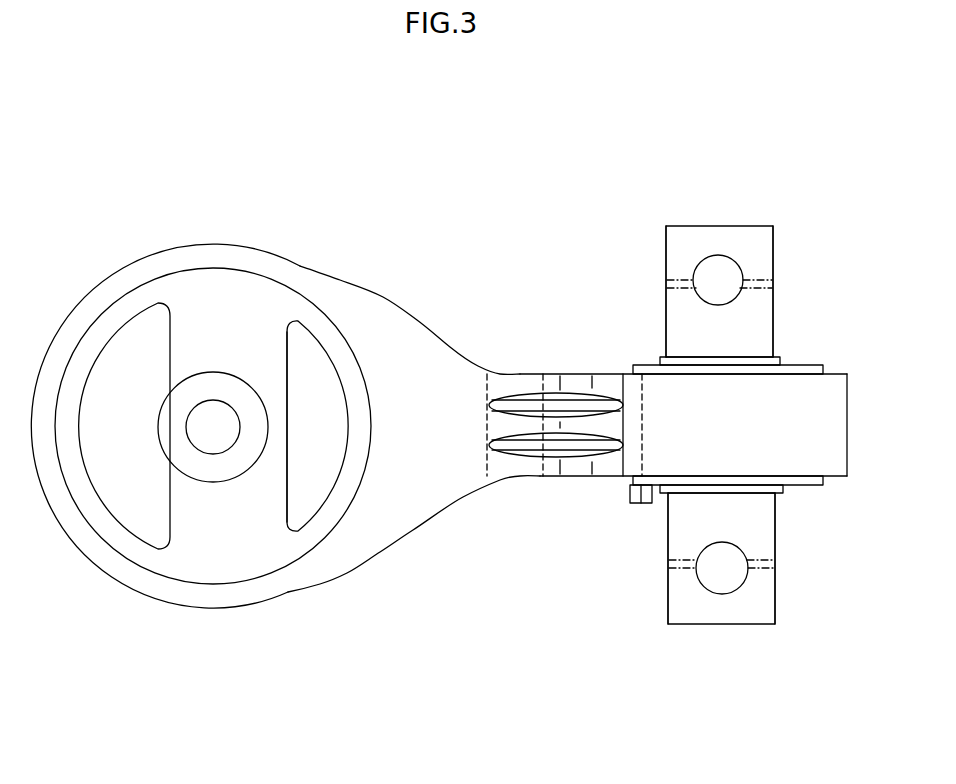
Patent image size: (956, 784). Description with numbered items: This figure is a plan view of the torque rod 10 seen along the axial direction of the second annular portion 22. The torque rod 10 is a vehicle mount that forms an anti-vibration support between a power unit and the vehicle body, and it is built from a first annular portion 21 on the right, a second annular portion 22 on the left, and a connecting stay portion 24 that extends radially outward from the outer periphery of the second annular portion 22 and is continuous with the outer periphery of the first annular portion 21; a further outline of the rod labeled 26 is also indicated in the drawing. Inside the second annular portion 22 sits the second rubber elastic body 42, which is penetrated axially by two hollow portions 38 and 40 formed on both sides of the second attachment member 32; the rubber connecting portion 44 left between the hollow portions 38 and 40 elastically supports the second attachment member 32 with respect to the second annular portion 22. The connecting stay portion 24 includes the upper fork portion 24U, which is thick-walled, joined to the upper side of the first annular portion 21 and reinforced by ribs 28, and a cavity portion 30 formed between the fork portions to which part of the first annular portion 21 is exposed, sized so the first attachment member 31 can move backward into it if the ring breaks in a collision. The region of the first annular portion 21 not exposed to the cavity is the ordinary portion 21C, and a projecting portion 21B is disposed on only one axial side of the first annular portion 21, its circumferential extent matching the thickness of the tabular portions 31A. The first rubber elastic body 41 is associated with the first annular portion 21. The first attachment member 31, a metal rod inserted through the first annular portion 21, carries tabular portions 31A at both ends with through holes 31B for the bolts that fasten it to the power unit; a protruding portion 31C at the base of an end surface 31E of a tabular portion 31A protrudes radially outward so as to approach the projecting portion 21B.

The torque rod 10 is at (415, 172).
The second annular portion 22 is at (168, 247).
The second rubber elastic body 42 is at (252, 271).
The arm portion 26 is at (440, 299).
The hollow portion 38 is at (115, 355).
The hollow portion 40 is at (303, 360).
The rubber connecting portion 44 is at (288, 443).
The second attachment member 32 is at (213, 371).
The connecting stay portion 24 is at (500, 371).
The upper fork portion 24U is at (617, 380).
The ribs 28 is at (588, 433).
The cavity portion 30 is at (590, 477).
The first annular portion 21 is at (852, 374).
The projecting portion 21B is at (623, 503).
The ordinary portion 21C is at (850, 437).
The first rubber elastic body 41 is at (800, 365).
The first attachment member 31 is at (735, 224).
The tabular portions 31A is at (692, 238).
The through holes 31B is at (703, 275).
The protruding portion 31C is at (663, 493).
The end surface 31E is at (664, 238).